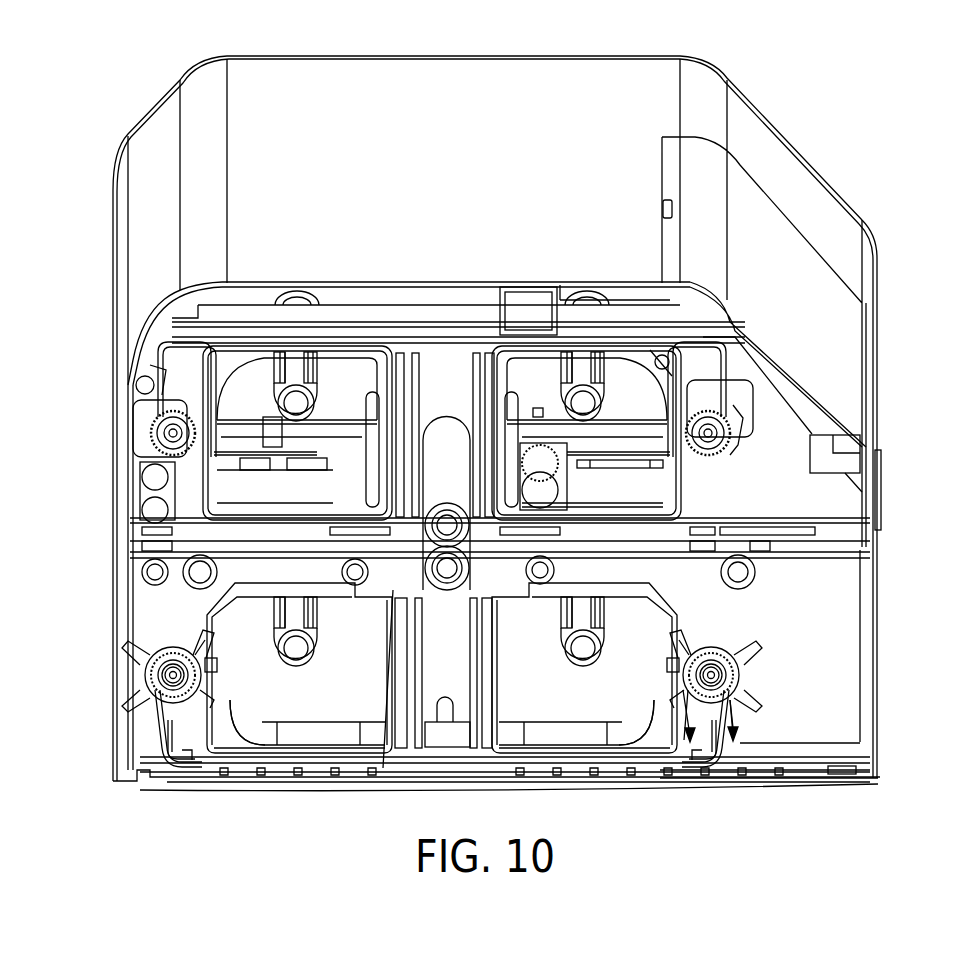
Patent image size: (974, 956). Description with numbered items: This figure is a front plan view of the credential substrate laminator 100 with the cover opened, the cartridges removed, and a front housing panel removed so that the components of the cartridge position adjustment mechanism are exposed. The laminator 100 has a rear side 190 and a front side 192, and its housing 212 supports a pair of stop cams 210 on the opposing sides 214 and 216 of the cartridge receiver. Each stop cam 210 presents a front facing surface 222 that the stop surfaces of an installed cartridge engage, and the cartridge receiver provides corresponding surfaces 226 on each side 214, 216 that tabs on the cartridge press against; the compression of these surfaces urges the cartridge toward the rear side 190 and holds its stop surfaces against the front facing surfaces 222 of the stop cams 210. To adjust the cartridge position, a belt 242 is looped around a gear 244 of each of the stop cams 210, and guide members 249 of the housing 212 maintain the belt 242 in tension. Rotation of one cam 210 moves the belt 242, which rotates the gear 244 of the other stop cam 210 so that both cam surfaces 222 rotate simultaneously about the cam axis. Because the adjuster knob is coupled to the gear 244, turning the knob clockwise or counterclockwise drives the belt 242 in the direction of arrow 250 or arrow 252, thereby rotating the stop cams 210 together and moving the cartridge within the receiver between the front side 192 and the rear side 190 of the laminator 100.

The laminator 100 is at (838, 118).
The rear side 190 is at (248, 58).
The front side 192 is at (313, 280).
The stop cams 210 is at (165, 650).
The housing 212 is at (607, 72).
The side 214 is at (873, 692).
The side 216 is at (113, 746).
The front facing surface 222 is at (198, 635).
The surface 226 is at (212, 666).
The belt 242 is at (157, 712).
The gear 244 is at (155, 678).
The guide members 249 is at (226, 748).
The arrow 250 is at (735, 717).
The arrow 252 is at (680, 712).